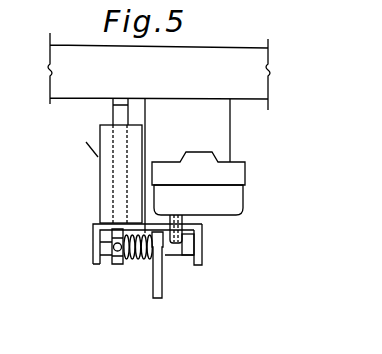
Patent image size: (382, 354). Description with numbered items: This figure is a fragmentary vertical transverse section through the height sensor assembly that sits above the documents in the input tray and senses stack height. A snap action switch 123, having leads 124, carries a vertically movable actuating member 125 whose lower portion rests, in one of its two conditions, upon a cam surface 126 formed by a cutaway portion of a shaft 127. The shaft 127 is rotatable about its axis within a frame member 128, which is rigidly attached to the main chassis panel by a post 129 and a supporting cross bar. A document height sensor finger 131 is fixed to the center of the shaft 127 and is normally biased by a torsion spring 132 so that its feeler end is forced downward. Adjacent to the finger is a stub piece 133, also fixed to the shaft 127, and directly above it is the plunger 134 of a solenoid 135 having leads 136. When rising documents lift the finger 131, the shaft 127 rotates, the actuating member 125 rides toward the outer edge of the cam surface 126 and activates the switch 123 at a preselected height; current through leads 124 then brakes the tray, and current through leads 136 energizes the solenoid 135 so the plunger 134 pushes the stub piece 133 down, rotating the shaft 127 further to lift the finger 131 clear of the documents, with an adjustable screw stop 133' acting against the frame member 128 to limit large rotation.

The snap action switch 123 is at (232, 201).
The leads 124 is at (246, 190).
The vertically movable actuating member 125 is at (183, 243).
The surface 126 is at (183, 247).
The shaft 127 is at (97, 264).
The frame member 128 is at (203, 236).
The post 129 is at (220, 125).
The document height sensor finger 131 is at (162, 298).
The torsion spring 132 is at (137, 260).
The stub piece 133 is at (96, 283).
The adjustable screw stop 133' is at (122, 280).
The plunger 134 is at (113, 193).
The solenoid 135 is at (100, 170).
The leads 136 is at (98, 160).